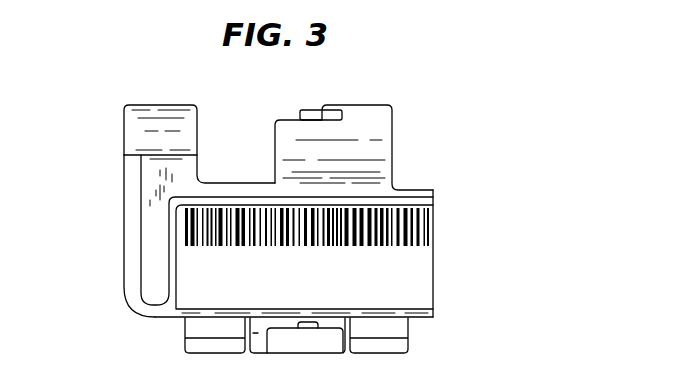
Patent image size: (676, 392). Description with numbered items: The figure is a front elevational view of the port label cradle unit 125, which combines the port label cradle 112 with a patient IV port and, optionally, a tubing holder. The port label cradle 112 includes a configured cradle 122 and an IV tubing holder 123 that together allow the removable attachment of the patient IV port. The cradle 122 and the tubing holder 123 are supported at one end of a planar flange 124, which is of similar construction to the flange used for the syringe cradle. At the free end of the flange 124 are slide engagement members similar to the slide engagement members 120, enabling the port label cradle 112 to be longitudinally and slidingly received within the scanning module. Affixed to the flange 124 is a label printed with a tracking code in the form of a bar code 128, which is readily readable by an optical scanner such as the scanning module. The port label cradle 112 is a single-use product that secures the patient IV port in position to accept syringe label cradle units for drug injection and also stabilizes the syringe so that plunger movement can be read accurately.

The port label cradle unit 125 is at (446, 184).
The IV tubing holder 123 is at (122, 136).
The cradle 122 is at (385, 122).
The planar flange 124 is at (428, 281).
The port label cradle 112 is at (433, 317).
The bar code 128 is at (190, 226).
The slide engagement members 120 is at (192, 343).